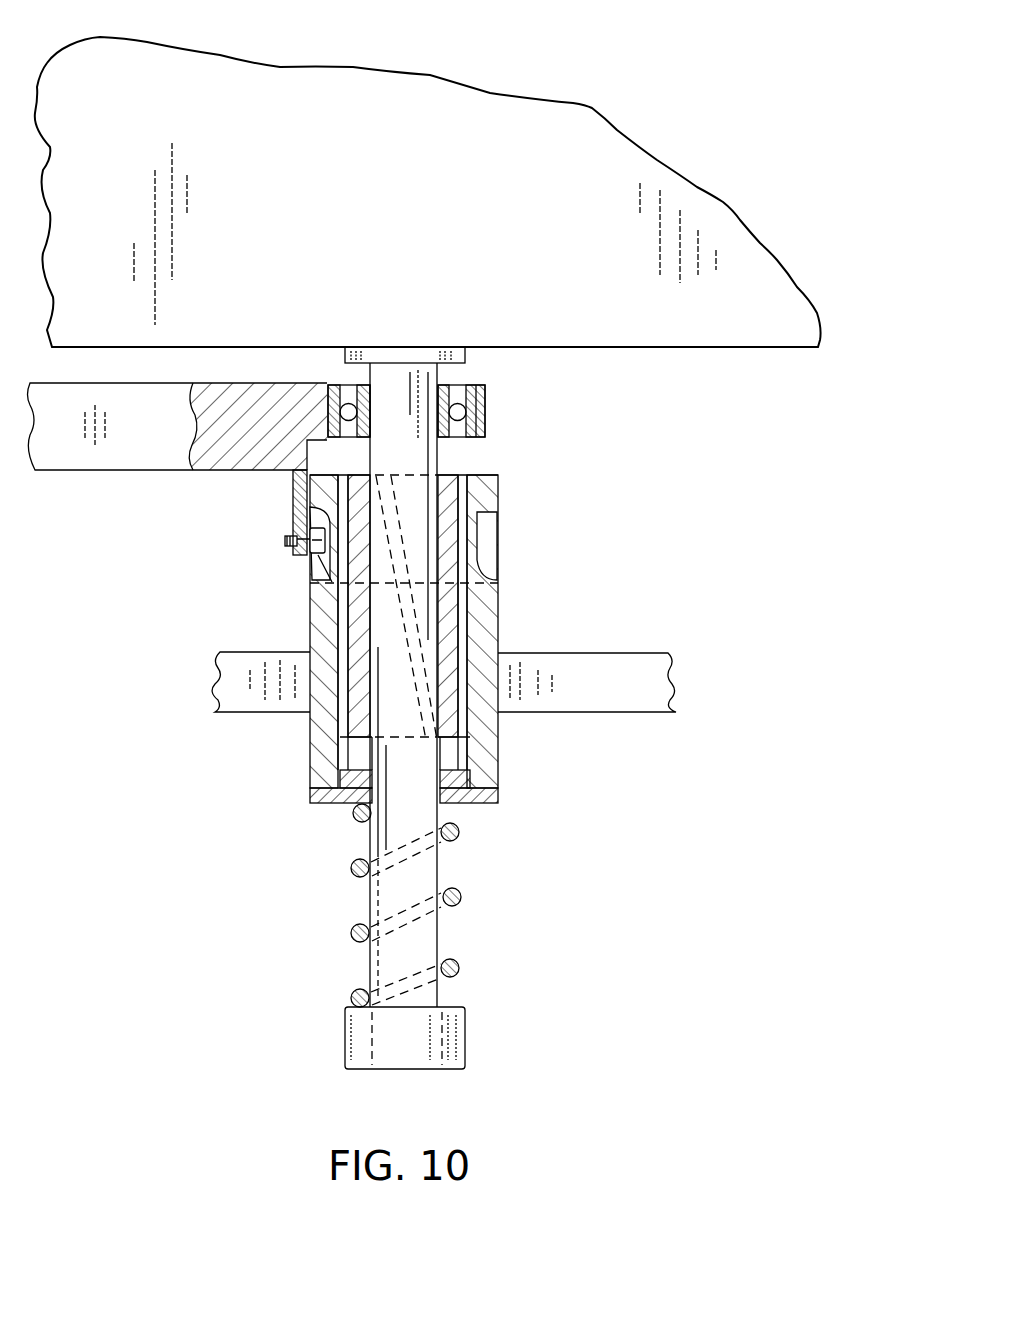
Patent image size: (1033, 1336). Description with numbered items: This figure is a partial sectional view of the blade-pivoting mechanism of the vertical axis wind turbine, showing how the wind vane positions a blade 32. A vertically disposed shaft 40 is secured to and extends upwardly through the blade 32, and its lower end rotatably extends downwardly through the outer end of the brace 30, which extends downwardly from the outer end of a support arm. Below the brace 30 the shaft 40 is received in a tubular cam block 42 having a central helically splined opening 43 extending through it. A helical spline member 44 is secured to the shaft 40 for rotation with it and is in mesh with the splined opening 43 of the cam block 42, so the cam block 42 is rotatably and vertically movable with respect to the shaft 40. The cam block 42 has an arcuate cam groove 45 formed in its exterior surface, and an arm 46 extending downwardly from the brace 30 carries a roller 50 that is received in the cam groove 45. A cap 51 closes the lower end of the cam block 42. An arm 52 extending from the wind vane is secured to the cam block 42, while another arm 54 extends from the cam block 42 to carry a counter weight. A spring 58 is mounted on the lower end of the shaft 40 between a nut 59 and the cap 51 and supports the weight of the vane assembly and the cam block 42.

The brace 30 is at (127, 445).
The blade 32 is at (567, 130).
The shaft 40 is at (410, 383).
The cam block 42 is at (304, 595).
The helically splined opening 43 is at (345, 715).
The helical spline member 44 is at (457, 492).
The cam groove 45 is at (318, 521).
The arm 46 is at (297, 487).
The roller 50 is at (310, 557).
The cap 51 is at (460, 797).
The arm 52 is at (588, 672).
The arm 54 is at (228, 693).
The spring 58 is at (460, 897).
The nut 59 is at (457, 1038).